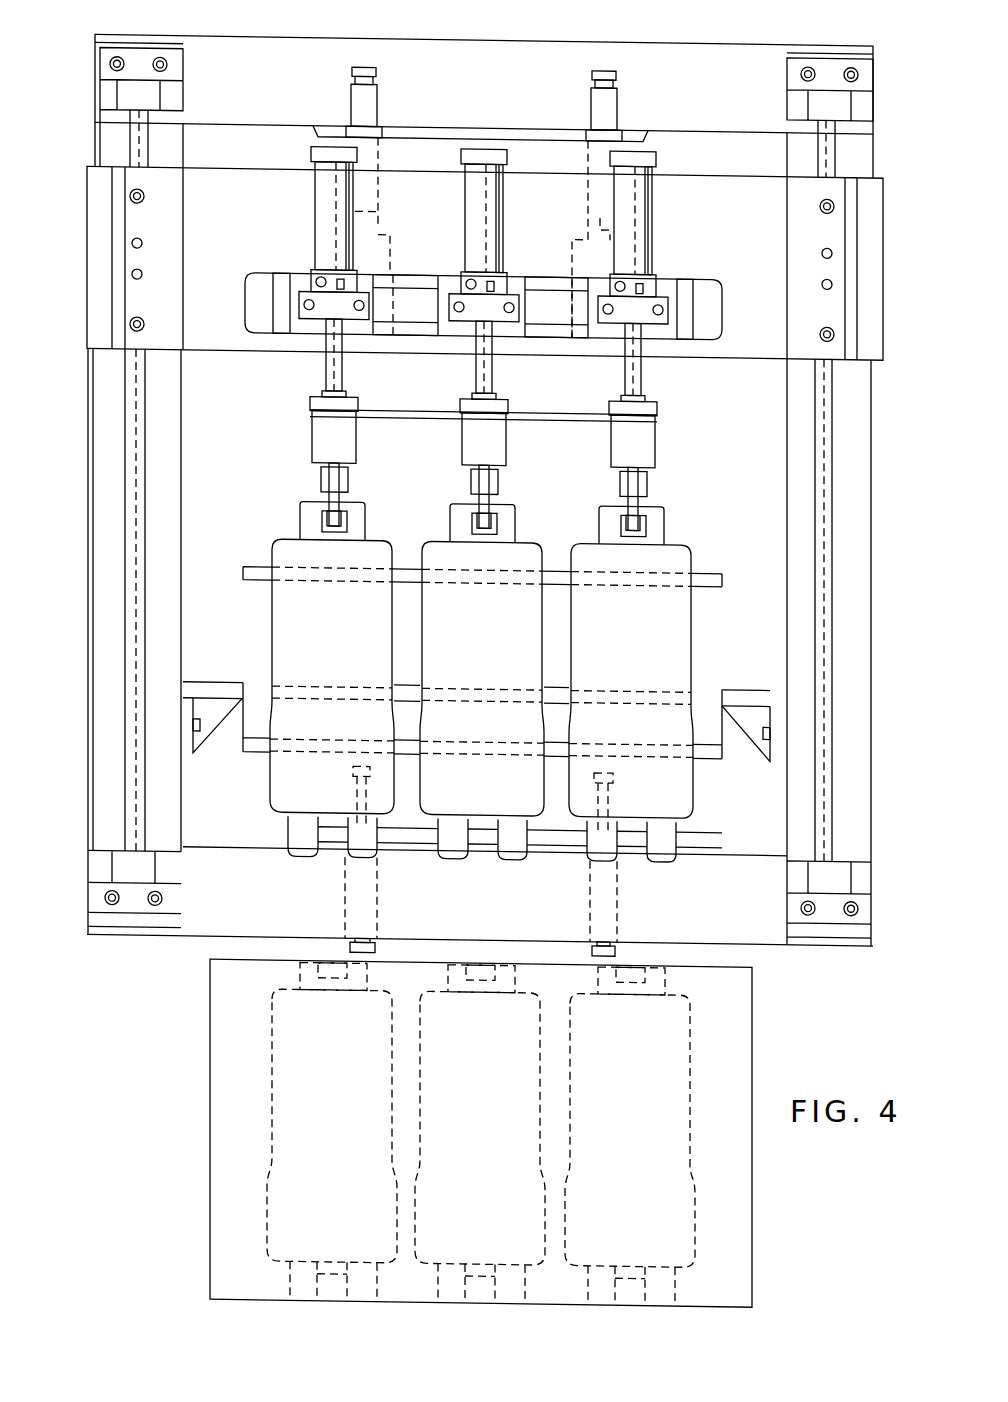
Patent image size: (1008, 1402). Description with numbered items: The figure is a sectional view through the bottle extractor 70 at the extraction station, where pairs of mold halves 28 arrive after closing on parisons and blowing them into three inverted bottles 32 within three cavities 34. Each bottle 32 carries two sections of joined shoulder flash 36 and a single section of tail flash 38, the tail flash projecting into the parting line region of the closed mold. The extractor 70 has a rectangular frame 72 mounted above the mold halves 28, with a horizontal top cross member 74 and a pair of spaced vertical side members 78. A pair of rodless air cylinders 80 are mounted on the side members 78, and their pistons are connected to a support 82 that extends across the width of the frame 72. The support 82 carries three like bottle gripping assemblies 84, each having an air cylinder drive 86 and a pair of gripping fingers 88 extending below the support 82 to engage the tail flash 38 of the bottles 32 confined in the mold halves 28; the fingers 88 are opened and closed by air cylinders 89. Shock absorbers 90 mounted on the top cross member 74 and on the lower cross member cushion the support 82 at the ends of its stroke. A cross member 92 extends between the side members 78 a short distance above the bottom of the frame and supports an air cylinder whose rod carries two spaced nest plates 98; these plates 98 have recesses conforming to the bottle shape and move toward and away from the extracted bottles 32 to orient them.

The mold halves 28 is at (737, 1288).
The inverted bottles 32 is at (351, 632).
The cavities 34 is at (283, 1116).
The shoulder flash 36 is at (357, 848).
The tail flash 38 is at (600, 522).
The bottle extractor 70 is at (123, 35).
The rectangular frame 72 is at (566, 38).
The top cross member 74 is at (768, 939).
The vertical side members 78 is at (93, 517).
The rodless air cylinders 80 is at (105, 441).
The support 82 is at (737, 183).
The bottle gripping assemblies 84 is at (460, 185).
The air cylinder drive 86 is at (307, 225).
The gripping fingers 88 is at (472, 499).
The air cylinders 89 is at (346, 439).
The shock absorbers 90 is at (590, 97).
The cross member 92 is at (753, 685).
The nest plates 98 is at (706, 569).